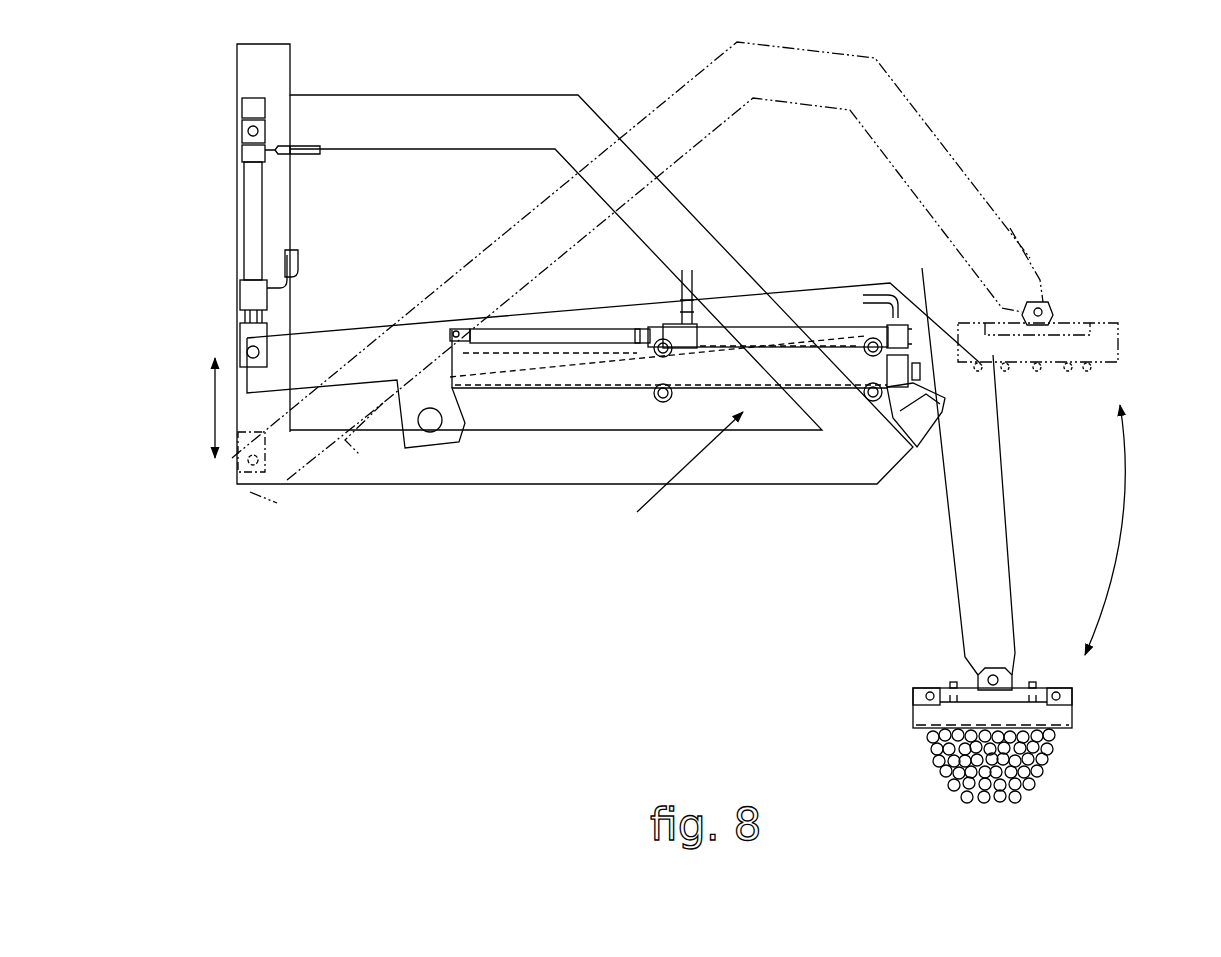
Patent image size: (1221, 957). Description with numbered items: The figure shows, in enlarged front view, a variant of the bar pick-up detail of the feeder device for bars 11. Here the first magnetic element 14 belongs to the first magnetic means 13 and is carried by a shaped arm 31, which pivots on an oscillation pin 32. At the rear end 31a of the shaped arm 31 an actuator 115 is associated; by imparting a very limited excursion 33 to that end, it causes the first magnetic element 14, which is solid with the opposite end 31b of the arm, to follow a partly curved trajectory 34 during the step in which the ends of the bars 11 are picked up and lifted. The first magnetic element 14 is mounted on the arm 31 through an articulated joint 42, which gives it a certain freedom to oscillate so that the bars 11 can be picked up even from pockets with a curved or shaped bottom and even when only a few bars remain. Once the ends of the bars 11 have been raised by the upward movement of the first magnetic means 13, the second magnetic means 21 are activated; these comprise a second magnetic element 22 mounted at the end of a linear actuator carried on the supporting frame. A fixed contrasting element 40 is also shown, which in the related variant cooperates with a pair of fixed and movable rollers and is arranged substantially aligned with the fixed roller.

The bars 11 is at (1040, 770).
The first magnetic means 13 is at (1035, 190).
The first magnetic element 14 is at (1120, 340).
The second magnetic means 21 is at (675, 475).
The second magnetic element 22 is at (905, 322).
The shaped arm 31 is at (713, 83).
The rear end of shaped arm 31a is at (252, 378).
The opposite end of shaped arm 31b is at (1012, 275).
The oscillation pin 32 is at (432, 420).
The excursion 33 is at (181, 408).
The partly curved trajectory 34 is at (1125, 530).
The fixed contrasting element 40 is at (923, 420).
The articulated joint 42 is at (1040, 312).
The actuator 115 is at (248, 208).